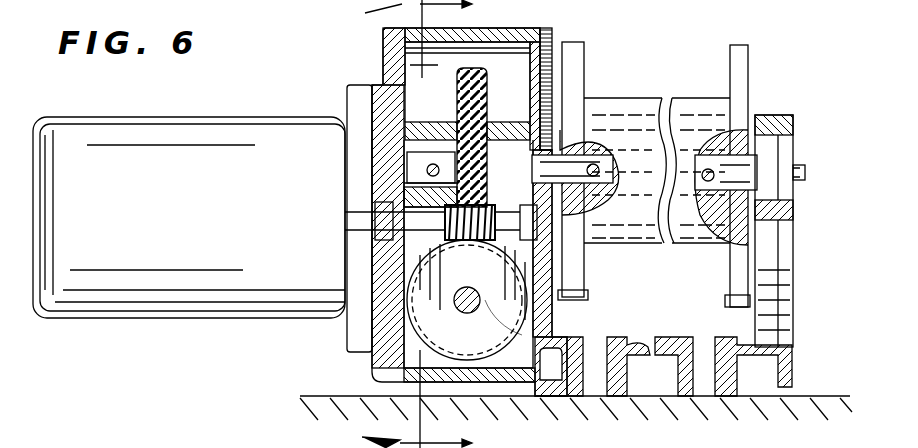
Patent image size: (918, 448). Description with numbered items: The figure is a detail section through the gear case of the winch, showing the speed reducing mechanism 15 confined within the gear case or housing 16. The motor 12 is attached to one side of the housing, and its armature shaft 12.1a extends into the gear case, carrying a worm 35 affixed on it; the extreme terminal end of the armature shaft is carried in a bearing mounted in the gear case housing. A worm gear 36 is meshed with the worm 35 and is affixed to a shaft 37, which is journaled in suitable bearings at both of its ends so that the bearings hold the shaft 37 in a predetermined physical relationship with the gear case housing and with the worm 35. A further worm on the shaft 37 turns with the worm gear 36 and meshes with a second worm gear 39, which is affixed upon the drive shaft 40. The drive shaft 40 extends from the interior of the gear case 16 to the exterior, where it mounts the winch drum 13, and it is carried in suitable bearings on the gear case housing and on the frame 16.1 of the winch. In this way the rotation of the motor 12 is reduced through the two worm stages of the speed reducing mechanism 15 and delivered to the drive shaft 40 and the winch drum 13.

The motor 12 is at (150, 135).
The armature shaft 12.1a is at (415, 222).
The winch drum 13 is at (567, 140).
The speed reducing mechanism 15 is at (508, 366).
The gear case 16 is at (533, 28).
The frame 16.1 is at (635, 345).
The worm 35 is at (407, 196).
The worm gear 36 is at (513, 298).
The shaft 37 is at (457, 297).
The second worm gear 39 is at (470, 72).
The drive shaft 40 is at (512, 163).